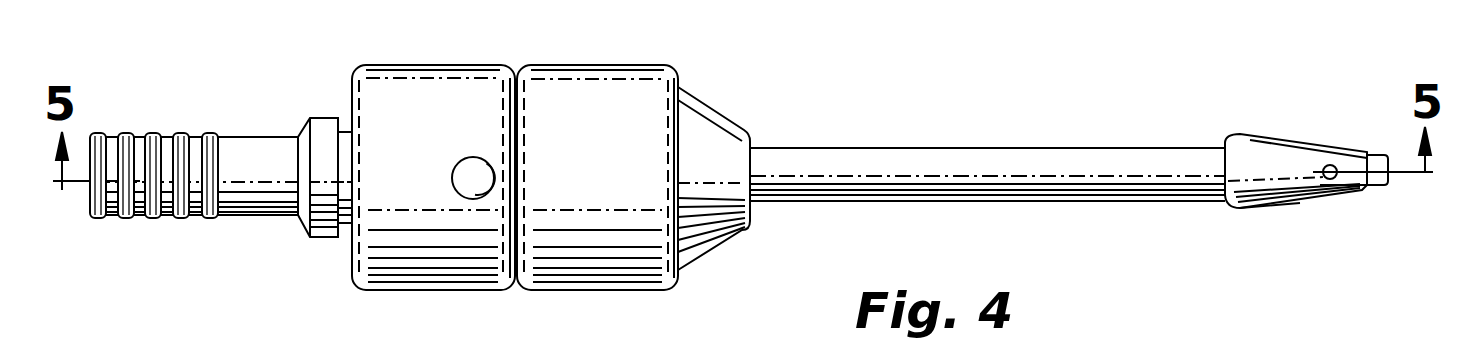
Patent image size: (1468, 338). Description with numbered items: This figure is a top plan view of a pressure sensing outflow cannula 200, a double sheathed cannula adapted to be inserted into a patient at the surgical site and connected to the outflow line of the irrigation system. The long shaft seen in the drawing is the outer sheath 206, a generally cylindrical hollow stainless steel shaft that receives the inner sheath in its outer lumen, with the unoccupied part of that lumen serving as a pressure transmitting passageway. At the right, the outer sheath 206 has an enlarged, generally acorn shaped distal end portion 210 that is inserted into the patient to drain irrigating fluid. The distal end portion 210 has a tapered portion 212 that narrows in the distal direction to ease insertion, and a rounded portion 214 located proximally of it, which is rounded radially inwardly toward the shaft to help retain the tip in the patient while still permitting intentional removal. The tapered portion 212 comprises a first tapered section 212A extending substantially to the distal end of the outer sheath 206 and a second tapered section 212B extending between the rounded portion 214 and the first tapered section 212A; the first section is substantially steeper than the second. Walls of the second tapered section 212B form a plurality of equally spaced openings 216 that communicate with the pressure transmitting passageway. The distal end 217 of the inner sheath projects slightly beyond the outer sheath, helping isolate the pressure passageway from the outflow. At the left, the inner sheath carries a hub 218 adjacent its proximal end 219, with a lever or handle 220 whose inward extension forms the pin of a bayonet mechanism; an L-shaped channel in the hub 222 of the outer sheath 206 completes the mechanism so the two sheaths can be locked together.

The outflow cannula 200 is at (734, 97).
The outer sheath 206 is at (953, 162).
The distal end portion 210 is at (1236, 127).
The tapered portion 212 is at (1287, 209).
The first tapered section 212A is at (1355, 198).
The second tapered section 212B is at (1317, 208).
The rounded portion 214 is at (1235, 210).
The openings 216 is at (1329, 164).
The distal end of inner sheath 217 is at (1378, 154).
The hub 218 is at (405, 90).
The proximal end 219 is at (152, 134).
The lever or handle 220 is at (474, 165).
The hub of outer sheath 222 is at (622, 90).